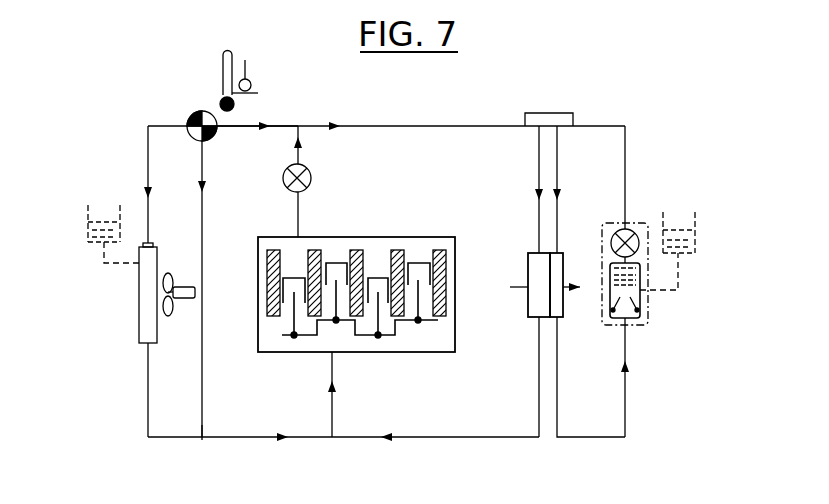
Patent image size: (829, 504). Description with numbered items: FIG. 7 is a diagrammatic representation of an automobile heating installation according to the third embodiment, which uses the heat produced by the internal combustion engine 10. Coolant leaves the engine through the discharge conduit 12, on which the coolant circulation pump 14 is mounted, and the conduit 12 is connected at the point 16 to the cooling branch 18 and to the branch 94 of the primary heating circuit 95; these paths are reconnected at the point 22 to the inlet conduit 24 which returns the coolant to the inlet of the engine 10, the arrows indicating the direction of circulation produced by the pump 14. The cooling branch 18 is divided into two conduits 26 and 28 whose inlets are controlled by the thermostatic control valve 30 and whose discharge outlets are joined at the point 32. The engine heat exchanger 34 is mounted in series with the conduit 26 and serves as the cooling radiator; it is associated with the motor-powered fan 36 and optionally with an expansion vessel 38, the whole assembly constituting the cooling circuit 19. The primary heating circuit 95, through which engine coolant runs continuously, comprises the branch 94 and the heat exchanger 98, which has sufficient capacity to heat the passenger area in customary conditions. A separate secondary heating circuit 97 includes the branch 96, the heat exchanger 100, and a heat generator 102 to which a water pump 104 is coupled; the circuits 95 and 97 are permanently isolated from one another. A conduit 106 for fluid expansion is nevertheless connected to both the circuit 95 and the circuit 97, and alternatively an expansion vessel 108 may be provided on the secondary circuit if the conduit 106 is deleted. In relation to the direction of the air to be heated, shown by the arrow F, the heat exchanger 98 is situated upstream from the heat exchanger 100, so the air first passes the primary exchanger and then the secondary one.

The internal combustion engine 10 is at (440, 354).
The discharge conduit 12 is at (300, 212).
The coolant circulation pump 14 is at (311, 178).
The connection point 16 is at (299, 126).
The cooling branch 18 is at (279, 126).
The cooling circuit 19 is at (253, 219).
The reconnection point 22 is at (333, 437).
The inlet conduit 24 is at (334, 410).
The radiator conduit 26 is at (148, 152).
The bypass conduit 28 is at (206, 166).
The thermostatic control valve 30 is at (192, 114).
The discharge connection point 32 is at (203, 437).
The engine heat exchanger 34 is at (139, 306).
The motor-powered fan 36 is at (185, 298).
The expansion vessel 38 is at (88, 236).
The branch 94 is at (402, 126).
The primary heating circuit 95 is at (466, 187).
The branch 96 is at (627, 421).
The secondary heating circuit 97 is at (581, 402).
The heat exchanger 98 is at (531, 255).
The heat exchanger 100 is at (560, 262).
The heat generator 102 is at (641, 278).
The water pump 104 is at (640, 240).
The fluid expansion conduit 106 is at (553, 113).
The expansion vessel 108 is at (696, 231).